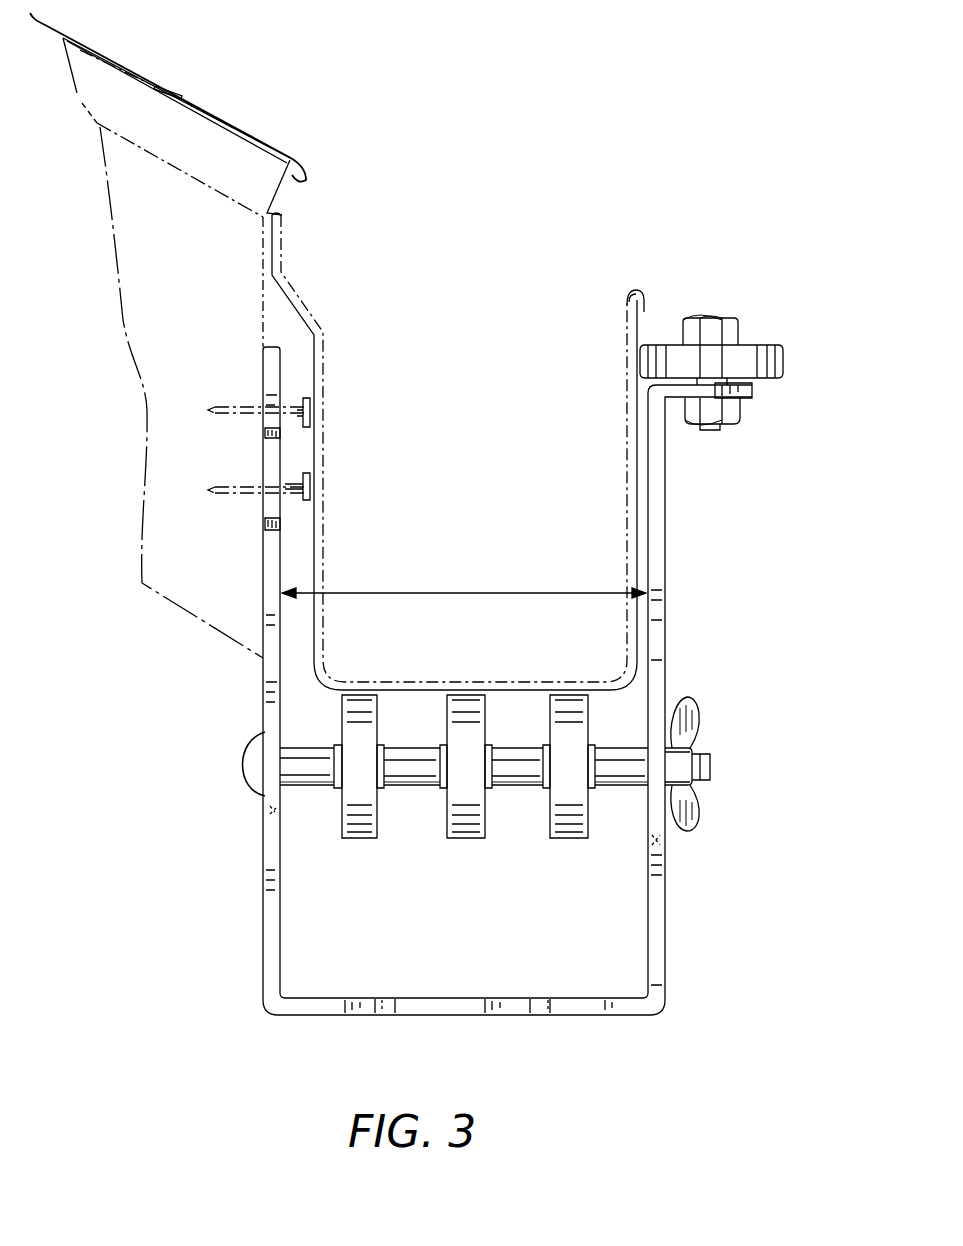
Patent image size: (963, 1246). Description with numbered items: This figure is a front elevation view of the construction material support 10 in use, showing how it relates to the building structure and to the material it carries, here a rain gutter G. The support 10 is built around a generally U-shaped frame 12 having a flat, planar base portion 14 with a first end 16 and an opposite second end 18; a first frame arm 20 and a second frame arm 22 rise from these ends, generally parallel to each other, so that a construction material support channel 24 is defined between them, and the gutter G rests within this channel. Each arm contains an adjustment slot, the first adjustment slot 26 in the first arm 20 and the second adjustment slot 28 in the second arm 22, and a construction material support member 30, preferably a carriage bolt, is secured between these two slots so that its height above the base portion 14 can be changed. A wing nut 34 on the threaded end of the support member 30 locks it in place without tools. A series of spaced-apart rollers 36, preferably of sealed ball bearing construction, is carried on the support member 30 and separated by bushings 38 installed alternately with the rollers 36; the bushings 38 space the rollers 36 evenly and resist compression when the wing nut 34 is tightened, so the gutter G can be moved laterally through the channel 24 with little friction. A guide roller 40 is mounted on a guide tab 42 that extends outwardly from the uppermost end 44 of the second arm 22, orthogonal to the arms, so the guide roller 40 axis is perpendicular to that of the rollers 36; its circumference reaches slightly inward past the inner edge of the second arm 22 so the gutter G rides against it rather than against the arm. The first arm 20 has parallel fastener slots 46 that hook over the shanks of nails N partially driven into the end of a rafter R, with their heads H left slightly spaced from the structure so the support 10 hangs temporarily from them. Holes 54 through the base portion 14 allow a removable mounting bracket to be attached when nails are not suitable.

The construction material support 10 is at (620, 1090).
The frame 12 is at (543, 908).
The base portion 14 is at (452, 1015).
The first end 16 is at (268, 1015).
The second end 18 is at (660, 1015).
The first frame arm 20 is at (263, 685).
The second frame arm 22 is at (665, 573).
The construction material support channel 24 is at (460, 593).
The first adjustment slot 26 is at (275, 812).
The second adjustment slot 28 is at (656, 838).
The construction material support member 30 is at (240, 764).
The wing nut 34 is at (705, 716).
The rollers 36 is at (560, 697).
The bushings 38 is at (308, 789).
The guide roller 40 is at (785, 355).
The guide tab 42 is at (752, 398).
The uppermost end 44 is at (648, 332).
The fastener slots 46 is at (275, 527).
The holes 54 is at (385, 998).
The rain gutter G is at (310, 330).
The heads H is at (317, 470).
The nails N is at (236, 488).
The rafter R is at (140, 433).